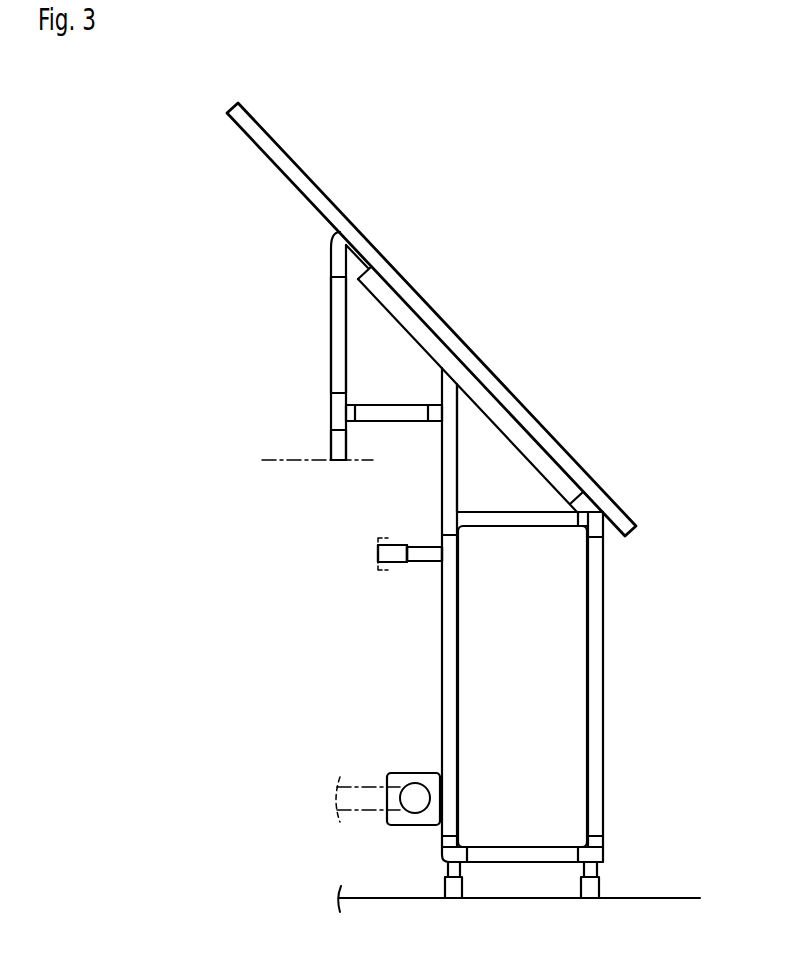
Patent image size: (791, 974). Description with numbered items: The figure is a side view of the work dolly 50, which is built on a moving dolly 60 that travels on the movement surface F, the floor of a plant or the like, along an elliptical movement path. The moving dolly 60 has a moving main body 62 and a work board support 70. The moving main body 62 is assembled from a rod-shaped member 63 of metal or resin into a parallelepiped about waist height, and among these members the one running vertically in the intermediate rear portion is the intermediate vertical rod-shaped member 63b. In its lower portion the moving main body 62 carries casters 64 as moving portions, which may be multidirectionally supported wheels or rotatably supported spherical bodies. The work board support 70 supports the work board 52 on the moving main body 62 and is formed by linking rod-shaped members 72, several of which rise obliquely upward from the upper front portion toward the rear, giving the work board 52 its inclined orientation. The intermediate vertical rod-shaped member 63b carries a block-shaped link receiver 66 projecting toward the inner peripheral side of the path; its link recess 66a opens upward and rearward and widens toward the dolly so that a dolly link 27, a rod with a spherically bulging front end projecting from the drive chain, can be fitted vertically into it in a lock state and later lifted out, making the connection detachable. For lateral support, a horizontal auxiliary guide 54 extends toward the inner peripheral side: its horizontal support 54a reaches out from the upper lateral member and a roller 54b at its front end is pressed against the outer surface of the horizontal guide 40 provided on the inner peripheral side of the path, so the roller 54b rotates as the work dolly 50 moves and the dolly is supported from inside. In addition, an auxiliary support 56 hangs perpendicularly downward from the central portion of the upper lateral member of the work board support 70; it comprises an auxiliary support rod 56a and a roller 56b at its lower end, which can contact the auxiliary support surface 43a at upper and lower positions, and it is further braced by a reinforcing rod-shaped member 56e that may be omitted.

The work board 52 is at (293, 153).
The work dolly 50 is at (530, 319).
The work board support 70 is at (315, 265).
The auxiliary support 56 is at (316, 352).
The auxiliary support rod 56a is at (348, 364).
The roller 56b is at (347, 443).
The reinforcing rod-shaped member 56e is at (413, 422).
The auxiliary support surface 43a is at (279, 456).
The rod-shaped member 72 is at (522, 453).
The moving dolly 60 is at (632, 598).
The intermediate vertical rod-shaped member 63b is at (440, 678).
The moving main body 62 is at (603, 677).
The rod-shaped member 63 is at (517, 522).
The caster 64 is at (583, 887).
The movement surface F is at (656, 897).
The horizontal auxiliary guide 54 is at (416, 545).
The horizontal support 54a is at (377, 552).
The roller 54b is at (422, 562).
The horizontal guide 40 is at (377, 580).
The link receiver 66 is at (410, 826).
The link recess 66a is at (414, 783).
The dolly link 27 is at (362, 815).